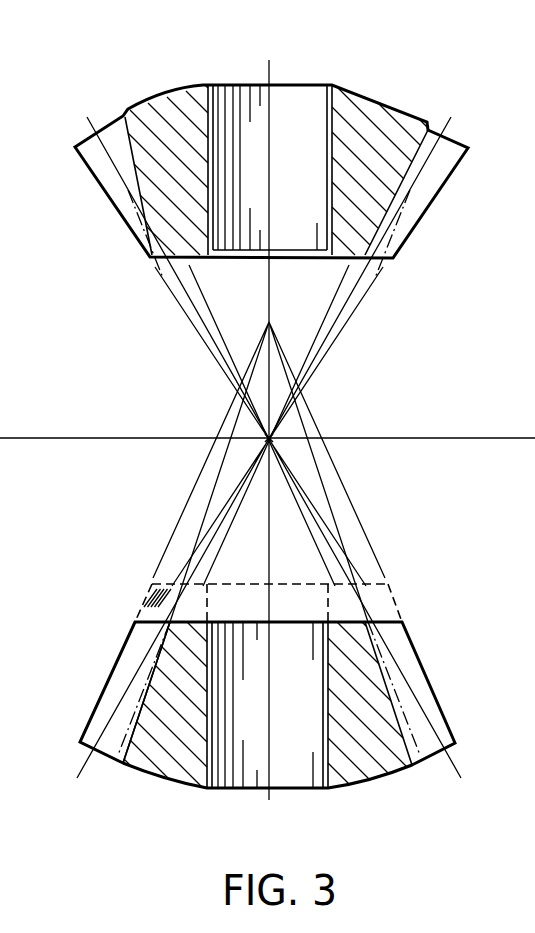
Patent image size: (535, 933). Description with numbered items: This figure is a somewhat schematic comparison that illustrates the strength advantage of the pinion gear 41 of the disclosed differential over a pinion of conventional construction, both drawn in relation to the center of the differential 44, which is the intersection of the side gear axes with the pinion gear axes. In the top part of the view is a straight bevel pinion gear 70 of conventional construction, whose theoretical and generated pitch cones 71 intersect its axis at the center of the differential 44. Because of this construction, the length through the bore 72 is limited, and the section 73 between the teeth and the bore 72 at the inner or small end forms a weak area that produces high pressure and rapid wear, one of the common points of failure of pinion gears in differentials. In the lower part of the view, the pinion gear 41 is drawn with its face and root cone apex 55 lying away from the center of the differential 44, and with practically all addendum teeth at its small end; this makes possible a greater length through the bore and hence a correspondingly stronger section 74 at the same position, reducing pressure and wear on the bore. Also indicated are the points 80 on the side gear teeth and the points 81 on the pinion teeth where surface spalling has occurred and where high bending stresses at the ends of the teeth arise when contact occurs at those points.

The straight bevel pinion gear 70 is at (378, 168).
The bore 72 is at (333, 138).
The section 73 is at (197, 263).
The pitch cones 71 is at (200, 315).
The face and root cone apex 55 is at (270, 320).
The center of the differential 44 is at (275, 441).
The pinion gear 41 is at (376, 738).
The section 74 is at (362, 622).
The points on the pinion teeth 81 is at (145, 603).
The points on the side gear teeth 80 is at (120, 750).